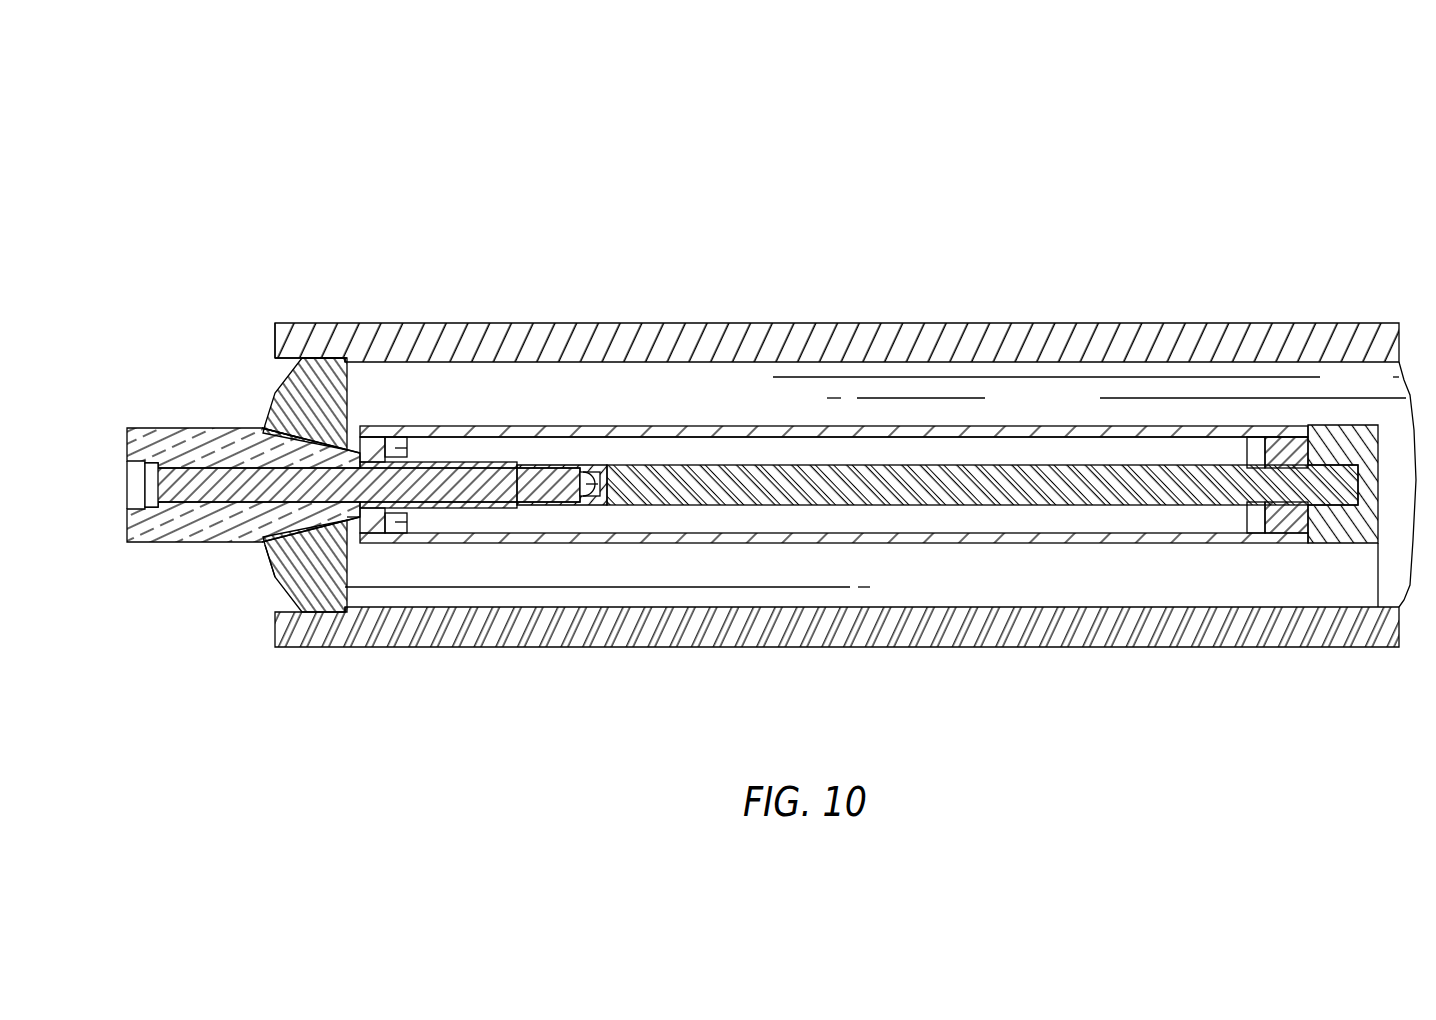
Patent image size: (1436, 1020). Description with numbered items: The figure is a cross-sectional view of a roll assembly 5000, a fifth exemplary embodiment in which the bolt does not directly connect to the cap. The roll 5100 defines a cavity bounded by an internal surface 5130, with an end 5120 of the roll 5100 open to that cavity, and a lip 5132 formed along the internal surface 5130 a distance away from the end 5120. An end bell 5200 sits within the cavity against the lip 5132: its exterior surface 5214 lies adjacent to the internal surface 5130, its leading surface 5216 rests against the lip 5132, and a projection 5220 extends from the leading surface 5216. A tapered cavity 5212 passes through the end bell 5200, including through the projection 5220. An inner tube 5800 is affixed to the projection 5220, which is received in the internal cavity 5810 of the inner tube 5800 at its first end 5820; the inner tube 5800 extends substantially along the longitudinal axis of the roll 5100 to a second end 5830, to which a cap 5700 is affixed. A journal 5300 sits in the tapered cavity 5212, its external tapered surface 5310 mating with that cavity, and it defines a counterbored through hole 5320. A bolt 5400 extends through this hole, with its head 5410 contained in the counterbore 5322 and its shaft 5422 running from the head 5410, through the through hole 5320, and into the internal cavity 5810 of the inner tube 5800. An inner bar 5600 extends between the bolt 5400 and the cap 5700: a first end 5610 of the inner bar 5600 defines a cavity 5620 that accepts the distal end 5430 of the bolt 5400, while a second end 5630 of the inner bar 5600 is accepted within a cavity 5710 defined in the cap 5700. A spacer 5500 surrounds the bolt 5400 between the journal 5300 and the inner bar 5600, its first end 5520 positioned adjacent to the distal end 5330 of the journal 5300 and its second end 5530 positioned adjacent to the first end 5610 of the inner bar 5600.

The roll assembly 5000 is at (300, 128).
The roll 5100 is at (612, 323).
The end of the roll 5120 is at (273, 337).
The internal surface 5130 is at (273, 362).
The lip 5132 is at (318, 358).
The end bell 5200 is at (263, 407).
The tapered cavity 5212 is at (265, 562).
The exterior surface 5214 is at (305, 357).
The leading surface 5216 is at (353, 593).
The projection 5220 is at (303, 612).
The journal 5300 is at (163, 428).
The external tapered surface 5310 is at (272, 542).
The through hole 5320 is at (232, 476).
The counterbore 5322 is at (128, 467).
The distal end of the journal 5330 is at (363, 537).
The bolt 5400 is at (190, 505).
The head 5410 is at (145, 490).
The shaft 5422 is at (265, 433).
The distal end of the bolt 5430 is at (545, 466).
The spacer 5500 is at (483, 427).
The first end of the spacer 5520 is at (371, 437).
The second end of the spacer 5530 is at (527, 508).
The inner bar 5600 is at (712, 463).
The first end of the inner bar 5610 is at (462, 462).
The cavity 5620 is at (612, 465).
The second end of the inner bar 5630 is at (1307, 467).
The cap 5700 is at (1378, 606).
The cavity 5710 is at (1360, 478).
The inner tube 5800 is at (900, 426).
The internal cavity 5810 is at (990, 450).
The first end of the inner tube 5820 is at (383, 543).
The second end of the inner tube 5830 is at (1285, 425).